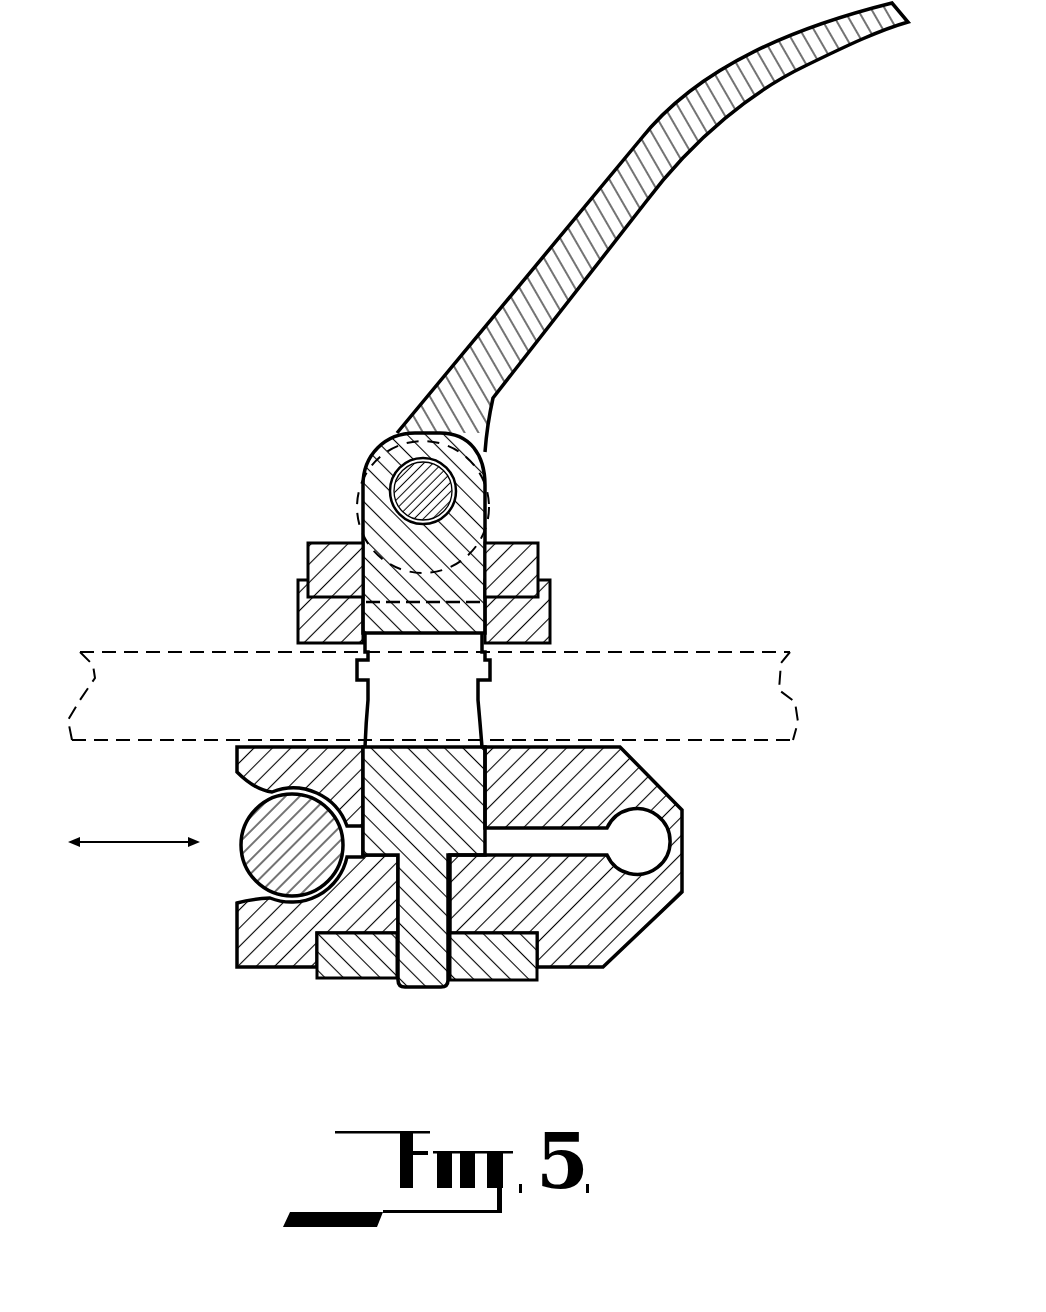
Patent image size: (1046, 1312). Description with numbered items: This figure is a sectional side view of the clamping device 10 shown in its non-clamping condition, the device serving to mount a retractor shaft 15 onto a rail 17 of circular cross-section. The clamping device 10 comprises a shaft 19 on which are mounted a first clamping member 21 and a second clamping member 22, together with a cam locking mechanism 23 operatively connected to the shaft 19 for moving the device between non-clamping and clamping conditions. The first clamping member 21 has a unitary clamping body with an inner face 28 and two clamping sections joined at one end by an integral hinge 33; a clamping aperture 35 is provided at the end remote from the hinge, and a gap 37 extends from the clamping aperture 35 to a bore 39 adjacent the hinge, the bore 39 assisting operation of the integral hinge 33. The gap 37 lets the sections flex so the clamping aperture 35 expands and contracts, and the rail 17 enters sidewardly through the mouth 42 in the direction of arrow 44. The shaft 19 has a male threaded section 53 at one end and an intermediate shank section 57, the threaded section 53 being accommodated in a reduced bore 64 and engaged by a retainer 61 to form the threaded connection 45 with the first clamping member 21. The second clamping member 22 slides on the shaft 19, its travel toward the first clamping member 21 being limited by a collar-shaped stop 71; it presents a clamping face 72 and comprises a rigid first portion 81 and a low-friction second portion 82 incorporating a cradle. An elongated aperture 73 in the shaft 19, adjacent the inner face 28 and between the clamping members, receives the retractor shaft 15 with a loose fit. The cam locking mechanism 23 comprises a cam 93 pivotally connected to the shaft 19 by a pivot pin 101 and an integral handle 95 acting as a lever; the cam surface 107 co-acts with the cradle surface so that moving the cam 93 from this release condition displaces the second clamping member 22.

The clamping device 10 is at (373, 436).
The retractor shaft 15 is at (741, 652).
The rail 17 is at (258, 857).
The shaft 19 is at (395, 582).
The first clamping member 21 is at (287, 975).
The second clamping member 22 is at (297, 566).
The cam locking mechanism 23 is at (508, 285).
The inner face 28 is at (605, 742).
The integral hinge 33 is at (683, 842).
The clamping aperture 35 is at (247, 789).
The gap 37 is at (563, 845).
The bore 39 is at (649, 858).
The mouth 42 is at (250, 898).
The arrow 44 is at (120, 843).
The threaded connection 45 is at (393, 958).
The male threaded section 53 is at (427, 970).
The intermediate shank section 57 is at (450, 793).
The retainer 61 is at (508, 978).
The bore 64 is at (392, 893).
The stop 71 is at (487, 668).
The clamping face 72 is at (325, 650).
The aperture 73 is at (363, 703).
The first portion 81 is at (528, 622).
The second portion 82 is at (520, 553).
The cam 93 is at (492, 487).
The handle 95 is at (603, 182).
The pivot pin 101 is at (413, 490).
The cam surface 107 is at (500, 522).